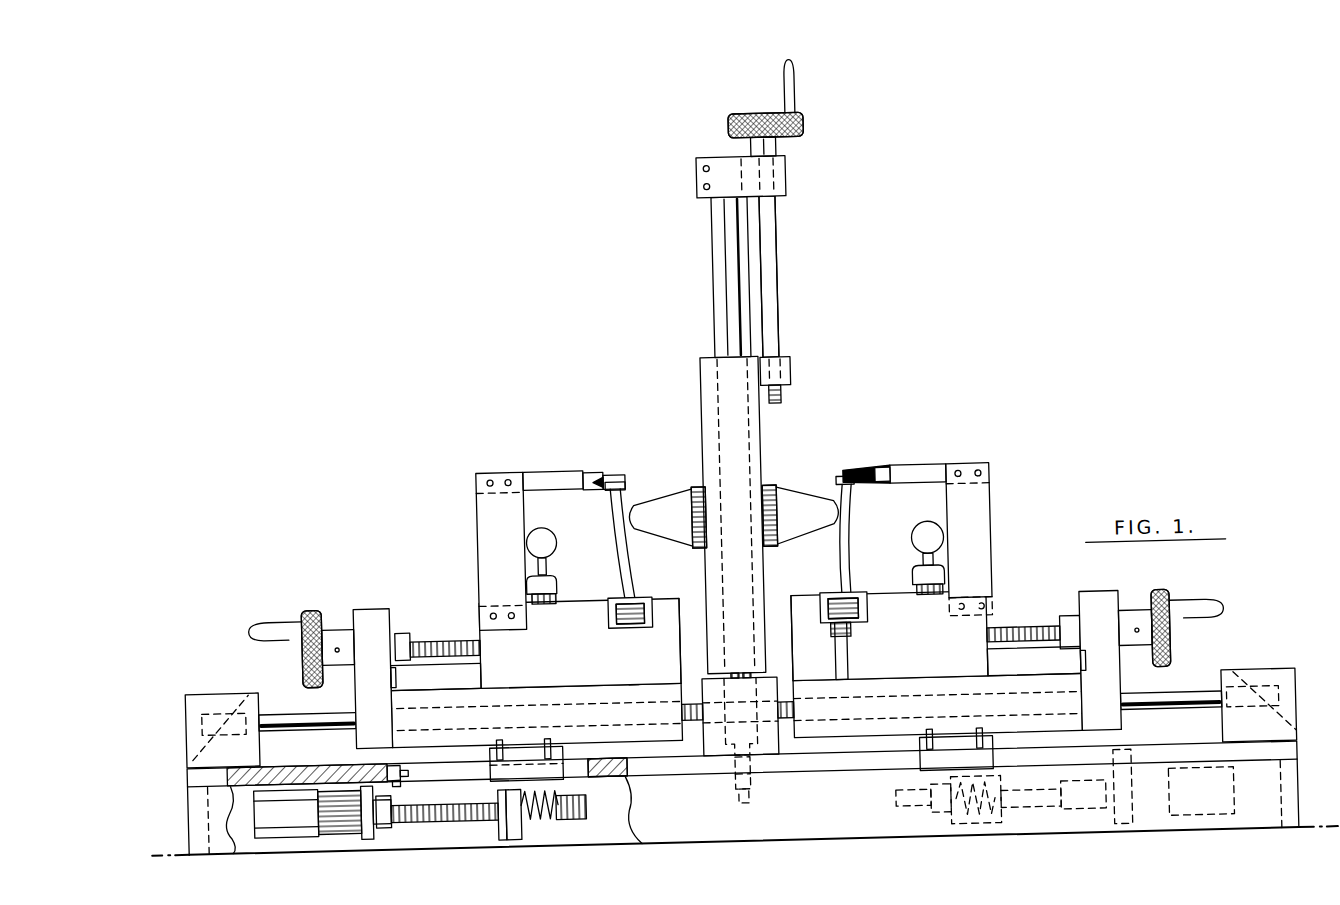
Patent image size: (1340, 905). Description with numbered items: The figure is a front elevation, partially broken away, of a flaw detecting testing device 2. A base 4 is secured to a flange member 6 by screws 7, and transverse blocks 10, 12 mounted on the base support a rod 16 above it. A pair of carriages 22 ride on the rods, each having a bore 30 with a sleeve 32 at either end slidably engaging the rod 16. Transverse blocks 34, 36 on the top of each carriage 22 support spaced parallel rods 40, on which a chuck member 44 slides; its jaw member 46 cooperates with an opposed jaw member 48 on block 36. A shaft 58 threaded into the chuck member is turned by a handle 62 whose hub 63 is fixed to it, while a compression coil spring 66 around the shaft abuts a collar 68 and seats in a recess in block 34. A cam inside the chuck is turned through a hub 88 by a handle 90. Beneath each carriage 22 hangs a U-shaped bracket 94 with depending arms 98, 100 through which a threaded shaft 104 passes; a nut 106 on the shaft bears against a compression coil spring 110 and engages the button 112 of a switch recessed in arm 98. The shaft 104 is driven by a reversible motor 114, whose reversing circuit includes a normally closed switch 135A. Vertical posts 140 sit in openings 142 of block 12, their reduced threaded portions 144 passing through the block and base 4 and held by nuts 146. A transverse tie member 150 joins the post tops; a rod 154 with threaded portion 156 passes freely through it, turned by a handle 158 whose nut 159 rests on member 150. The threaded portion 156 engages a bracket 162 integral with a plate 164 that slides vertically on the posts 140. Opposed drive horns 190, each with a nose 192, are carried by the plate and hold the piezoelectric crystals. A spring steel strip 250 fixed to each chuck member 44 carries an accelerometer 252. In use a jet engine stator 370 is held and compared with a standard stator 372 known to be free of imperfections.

The testing device 2 is at (1008, 356).
The base 4 is at (300, 758).
The flange member 6 is at (192, 792).
The screws 7 is at (360, 760).
The transverse block 10 is at (232, 683).
The transverse block 12 is at (770, 758).
The rod 16 is at (300, 716).
The carriage 22 is at (632, 742).
The bore 30 is at (575, 700).
The sleeve 32 is at (368, 700).
The transverse block 34 is at (376, 602).
The transverse block 36 is at (678, 615).
The parallel rod 40 is at (483, 660).
The chuck member 44 is at (544, 660).
The jaw member 46 is at (612, 612).
The jaw member 48 is at (650, 597).
The shaft 58 is at (452, 636).
The handle 62 is at (262, 610).
The hub 63 is at (330, 622).
The compression coil spring 66 is at (408, 625).
The collar 68 is at (396, 658).
The hub 88 is at (532, 580).
The handle 90 is at (556, 528).
The U-shaped bracket 94 is at (515, 752).
The arm 98 is at (478, 800).
The arm 100 is at (570, 786).
The threaded shaft 104 is at (420, 808).
The nut 106 is at (512, 820).
The compression coil spring 110 is at (560, 810).
The button 112 is at (480, 826).
The reversible motor 114 is at (1240, 815).
The normally closed switch 135A is at (398, 760).
The vertical post 140 is at (726, 272).
The opening 142 is at (796, 664).
The reduced threaded portion 144 is at (758, 795).
The nut 146 is at (733, 786).
The transverse tie member 150 is at (735, 160).
The rod 154 is at (806, 250).
The threaded portion 156 is at (790, 271).
The handle 158 is at (812, 90).
The nut 159 is at (793, 145).
The bracket 162 is at (801, 372).
The plate 164 is at (770, 434).
The drive horn 190 is at (672, 504).
The nose 192 is at (622, 540).
The spring steel strip 250 is at (540, 470).
The accelerometer 252 is at (622, 473).
The stator 370 is at (574, 470).
The stator 372 is at (905, 470).